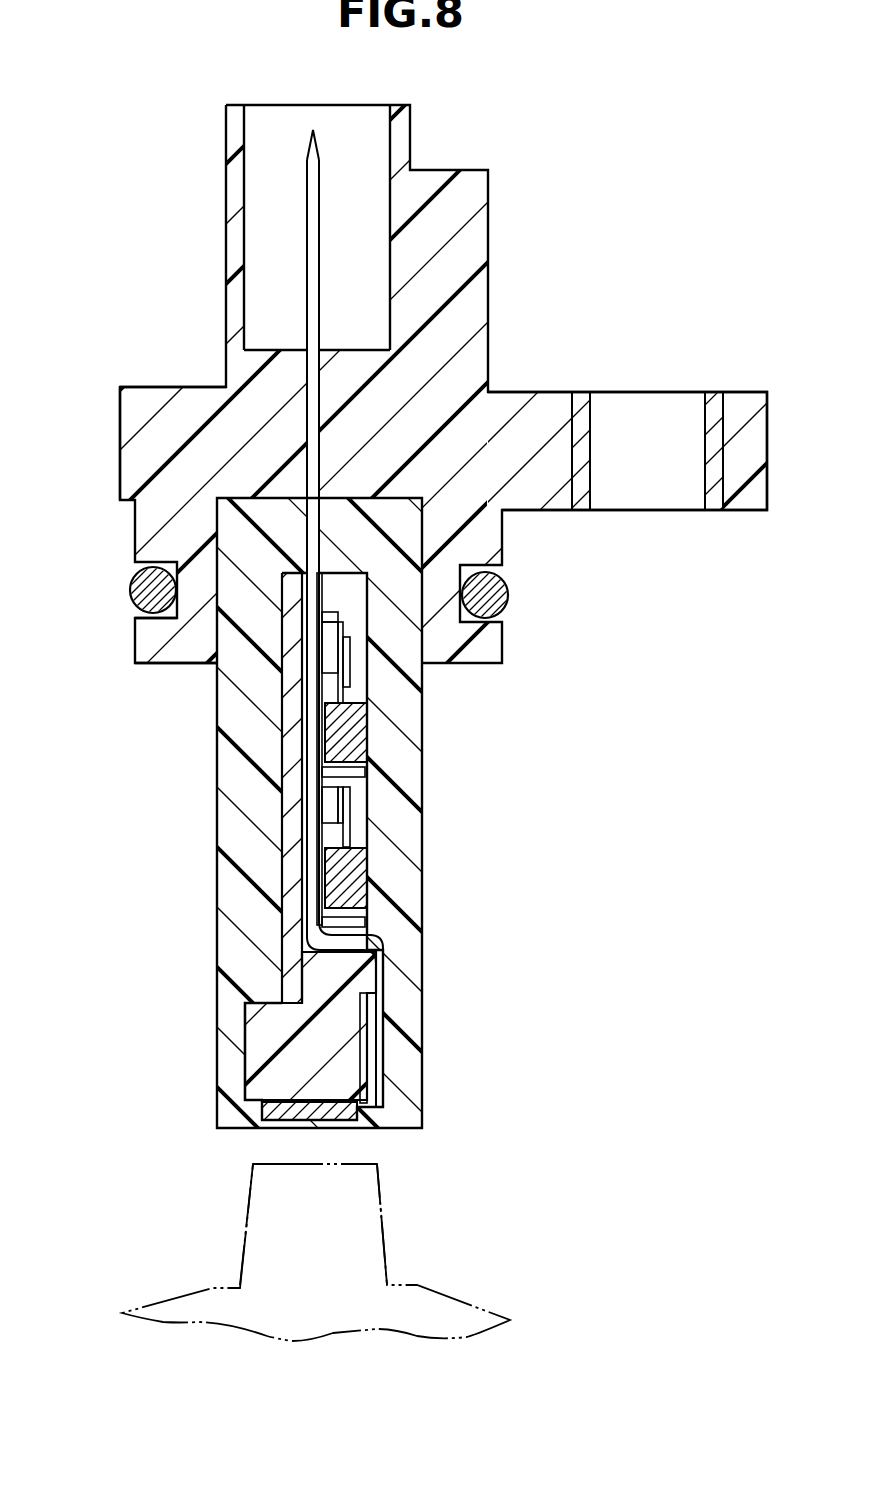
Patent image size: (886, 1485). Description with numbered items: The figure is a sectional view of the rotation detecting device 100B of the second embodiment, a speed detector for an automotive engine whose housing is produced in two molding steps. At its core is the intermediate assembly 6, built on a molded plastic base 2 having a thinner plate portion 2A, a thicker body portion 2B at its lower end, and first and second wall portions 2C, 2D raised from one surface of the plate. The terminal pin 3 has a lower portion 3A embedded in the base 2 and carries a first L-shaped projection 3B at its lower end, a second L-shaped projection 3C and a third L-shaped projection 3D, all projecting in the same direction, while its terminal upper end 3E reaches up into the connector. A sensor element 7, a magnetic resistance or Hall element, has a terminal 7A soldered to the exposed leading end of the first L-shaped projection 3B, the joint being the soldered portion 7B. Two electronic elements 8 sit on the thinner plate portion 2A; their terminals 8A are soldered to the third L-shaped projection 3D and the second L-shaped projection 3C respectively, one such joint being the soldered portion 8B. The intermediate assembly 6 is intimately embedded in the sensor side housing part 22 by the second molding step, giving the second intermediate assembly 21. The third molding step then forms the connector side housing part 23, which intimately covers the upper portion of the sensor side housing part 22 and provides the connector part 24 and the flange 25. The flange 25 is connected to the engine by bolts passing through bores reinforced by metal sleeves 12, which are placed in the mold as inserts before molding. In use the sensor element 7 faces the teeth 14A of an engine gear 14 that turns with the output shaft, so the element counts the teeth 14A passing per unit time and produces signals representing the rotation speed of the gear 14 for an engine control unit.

The rotation detecting device 100B is at (706, 106).
The second intermediate assembly 21 is at (217, 530).
The sensor side housing part 22 is at (240, 623).
The connector side housing part 23 is at (135, 435).
The connector part 24 is at (232, 170).
The flange 25 is at (543, 400).
The metal sleeve 12 is at (714, 400).
The molded plastic base 2 is at (290, 715).
The thinner plate portion 2A is at (285, 775).
The thicker body portion 2B is at (265, 1043).
The first wall portion 2C is at (368, 925).
The second wall portion 2D is at (368, 772).
The terminal pin 3 is at (310, 372).
The lower portion of terminal pin 3A is at (315, 887).
The first L-shaped projection 3B is at (385, 950).
The second L-shaped projection 3C is at (343, 845).
The third L-shaped projection 3D is at (330, 607).
The terminal upper end 3E is at (312, 258).
The intermediate assembly 6 is at (282, 963).
The sensor element 7 is at (300, 1108).
The terminal 7A is at (385, 1053).
The soldered portion 7B is at (380, 963).
The electronic element 8 is at (370, 735).
The terminal 8A is at (335, 838).
The soldered portion 8B is at (350, 650).
The gear 14 is at (427, 1297).
The teeth 14A is at (260, 1240).